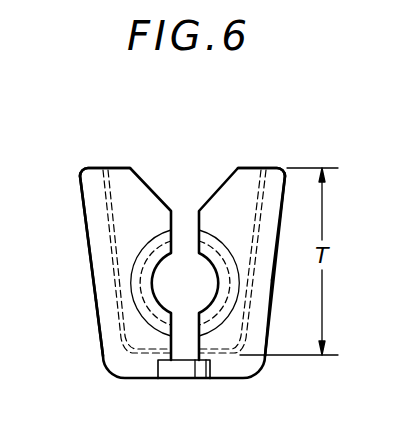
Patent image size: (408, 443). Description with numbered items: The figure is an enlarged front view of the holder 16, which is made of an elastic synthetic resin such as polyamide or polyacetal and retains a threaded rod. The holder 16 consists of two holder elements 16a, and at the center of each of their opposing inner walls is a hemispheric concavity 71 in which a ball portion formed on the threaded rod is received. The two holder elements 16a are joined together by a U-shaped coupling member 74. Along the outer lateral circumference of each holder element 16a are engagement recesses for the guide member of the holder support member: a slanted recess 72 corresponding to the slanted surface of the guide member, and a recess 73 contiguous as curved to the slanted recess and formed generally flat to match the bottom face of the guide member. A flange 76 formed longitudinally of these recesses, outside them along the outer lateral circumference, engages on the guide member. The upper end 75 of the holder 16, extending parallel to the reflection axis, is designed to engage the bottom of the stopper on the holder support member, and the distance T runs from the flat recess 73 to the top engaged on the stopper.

The holder 16 is at (131, 168).
The holder element 16a is at (100, 268).
The hemispheric concavity 71 is at (151, 308).
The slanted recess 72 is at (110, 232).
The recess 73 is at (147, 358).
The U-shaped coupling member 74 is at (202, 370).
The upper end 75 is at (110, 168).
The flange 76 is at (112, 319).